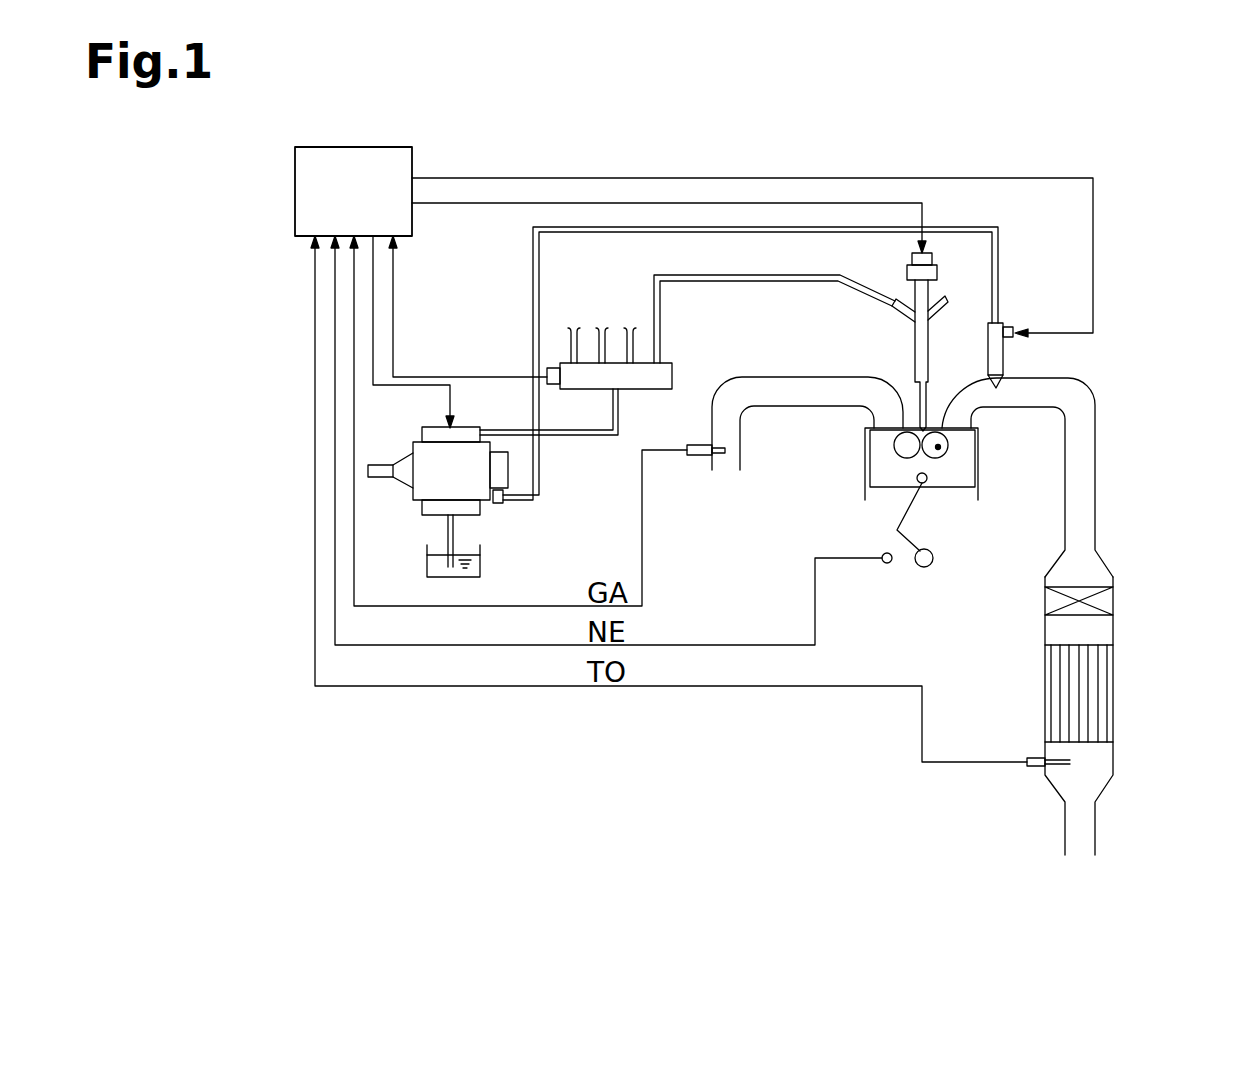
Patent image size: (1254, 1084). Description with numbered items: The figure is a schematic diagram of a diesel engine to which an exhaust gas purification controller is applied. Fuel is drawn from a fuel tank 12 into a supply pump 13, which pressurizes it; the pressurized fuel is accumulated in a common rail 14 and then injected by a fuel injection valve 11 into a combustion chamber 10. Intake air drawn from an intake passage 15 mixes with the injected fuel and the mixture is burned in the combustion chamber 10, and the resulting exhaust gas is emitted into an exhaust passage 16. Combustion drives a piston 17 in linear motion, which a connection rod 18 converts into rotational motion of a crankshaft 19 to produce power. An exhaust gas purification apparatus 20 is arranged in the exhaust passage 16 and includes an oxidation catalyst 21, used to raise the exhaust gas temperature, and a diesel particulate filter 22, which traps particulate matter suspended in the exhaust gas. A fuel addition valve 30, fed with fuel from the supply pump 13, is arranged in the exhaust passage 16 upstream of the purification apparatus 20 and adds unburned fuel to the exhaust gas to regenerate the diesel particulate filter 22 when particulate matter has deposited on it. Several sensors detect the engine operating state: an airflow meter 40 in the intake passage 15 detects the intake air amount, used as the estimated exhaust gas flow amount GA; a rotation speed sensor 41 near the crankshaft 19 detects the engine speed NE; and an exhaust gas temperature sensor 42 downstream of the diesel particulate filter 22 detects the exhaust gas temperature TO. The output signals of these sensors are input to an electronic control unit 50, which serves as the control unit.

The combustion chamber 10 is at (940, 446).
The fuel injection valve 11 is at (930, 340).
The fuel tank 12 is at (480, 566).
The supply pump 13 is at (480, 507).
The common rail 14 is at (672, 373).
The intake passage 15 is at (800, 377).
The exhaust passage 16 is at (1095, 440).
The piston 17 is at (978, 462).
The connection rod 18 is at (906, 516).
The crankshaft 19 is at (933, 562).
The exhaust gas purification apparatus 20 is at (1149, 711).
The oxidation catalyst 21 is at (1130, 580).
The diesel particulate filter 22 is at (1097, 645).
The fuel addition valve 30 is at (1003, 355).
The airflow meter 40 is at (690, 445).
The rotation speed sensor 41 is at (888, 563).
The exhaust gas temperature sensor 42 is at (1033, 758).
The electronic control unit 50 is at (398, 147).